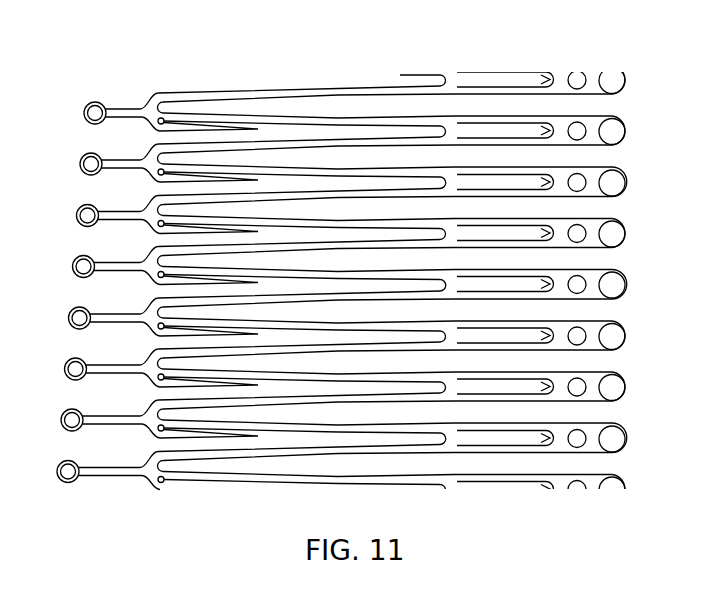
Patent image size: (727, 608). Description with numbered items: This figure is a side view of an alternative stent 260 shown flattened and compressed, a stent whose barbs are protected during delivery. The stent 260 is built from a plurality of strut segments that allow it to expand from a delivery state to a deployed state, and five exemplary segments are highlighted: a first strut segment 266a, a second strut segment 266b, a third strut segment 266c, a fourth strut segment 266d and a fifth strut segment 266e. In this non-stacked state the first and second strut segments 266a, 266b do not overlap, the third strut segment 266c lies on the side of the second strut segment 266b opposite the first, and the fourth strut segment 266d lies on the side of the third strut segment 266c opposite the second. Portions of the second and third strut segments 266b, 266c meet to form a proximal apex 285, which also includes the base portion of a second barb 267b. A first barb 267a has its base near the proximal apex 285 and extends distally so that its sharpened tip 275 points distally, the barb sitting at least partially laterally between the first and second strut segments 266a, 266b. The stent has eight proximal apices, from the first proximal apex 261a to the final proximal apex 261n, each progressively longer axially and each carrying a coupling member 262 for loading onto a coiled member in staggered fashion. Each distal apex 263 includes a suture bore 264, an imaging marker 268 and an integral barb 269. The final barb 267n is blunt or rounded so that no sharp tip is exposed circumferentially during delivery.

The stent 260 is at (136, 38).
The first proximal apex 261a is at (120, 107).
The final proximal apex 261n is at (112, 477).
The coupling member 262 is at (85, 110).
The distal apex 263 is at (630, 140).
The suture bore 264 is at (615, 130).
The first strut segment 266a is at (293, 118).
The second strut segment 266b is at (333, 140).
The third strut segment 266c is at (357, 175).
The fourth strut segment 266d is at (395, 190).
The fifth strut segment 266e is at (415, 232).
The first barb 267a is at (178, 125).
The second barb 267b is at (163, 185).
The final barb 267n is at (168, 484).
The imaging marker 268 is at (577, 130).
The integral barb 269 is at (507, 130).
The sharpened tip 275 is at (267, 138).
The proximal apex 285 is at (152, 157).